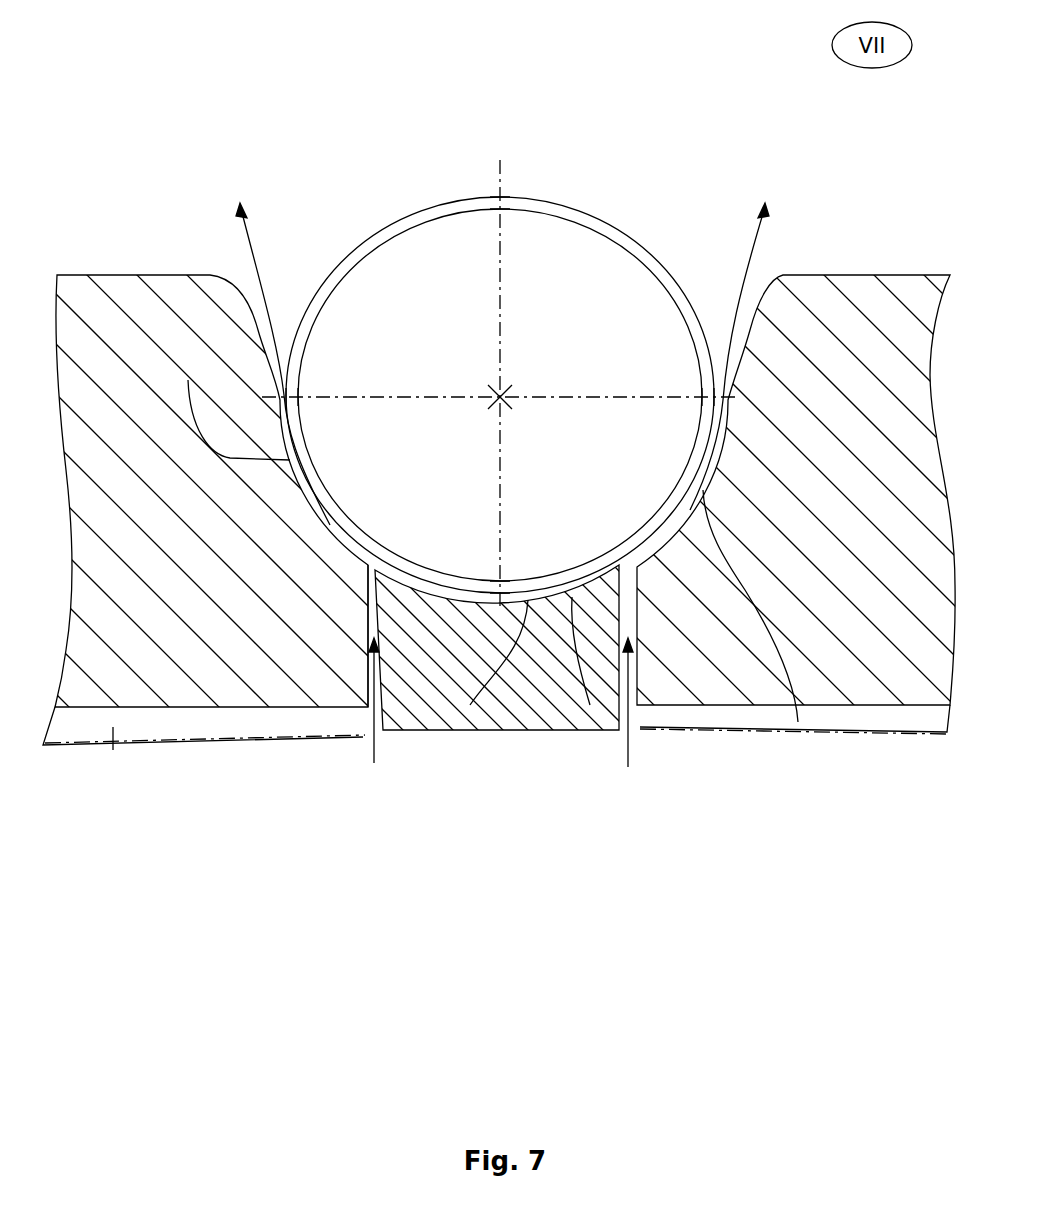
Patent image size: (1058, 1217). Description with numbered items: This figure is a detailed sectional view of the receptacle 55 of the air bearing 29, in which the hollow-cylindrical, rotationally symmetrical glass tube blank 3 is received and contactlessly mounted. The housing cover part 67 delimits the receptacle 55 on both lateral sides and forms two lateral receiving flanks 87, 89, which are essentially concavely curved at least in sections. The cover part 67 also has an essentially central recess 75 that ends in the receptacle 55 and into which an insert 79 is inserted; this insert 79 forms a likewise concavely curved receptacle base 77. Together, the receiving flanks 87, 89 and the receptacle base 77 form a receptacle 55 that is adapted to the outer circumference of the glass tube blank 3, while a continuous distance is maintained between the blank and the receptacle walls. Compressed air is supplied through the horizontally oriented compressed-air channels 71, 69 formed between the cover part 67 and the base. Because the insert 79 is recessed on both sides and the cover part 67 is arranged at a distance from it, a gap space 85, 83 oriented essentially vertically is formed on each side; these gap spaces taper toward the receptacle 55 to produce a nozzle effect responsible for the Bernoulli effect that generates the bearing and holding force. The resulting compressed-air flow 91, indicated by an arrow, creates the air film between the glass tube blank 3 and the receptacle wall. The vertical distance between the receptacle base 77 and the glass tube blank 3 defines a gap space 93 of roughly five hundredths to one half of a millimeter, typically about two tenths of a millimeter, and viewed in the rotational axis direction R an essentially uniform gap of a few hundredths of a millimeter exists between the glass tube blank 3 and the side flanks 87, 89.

The glass tube blank 3 is at (540, 200).
The air bearing 29 is at (723, 152).
The receptacle 55 is at (316, 237).
The cover part 67 is at (882, 397).
The compressed-air channel 69 is at (918, 722).
The compressed-air channel 71 is at (113, 727).
The central recess 75 is at (370, 668).
The receptacle base 77 is at (590, 705).
The insert 79 is at (542, 705).
The gap space 83 is at (640, 713).
The gap space 85 is at (368, 725).
The receiving flank 87 is at (188, 380).
The receiving flank 89 is at (798, 722).
The compressed-air flow 91 is at (760, 237).
The gap space 93 is at (470, 705).
The rotational axis direction R is at (506, 397).